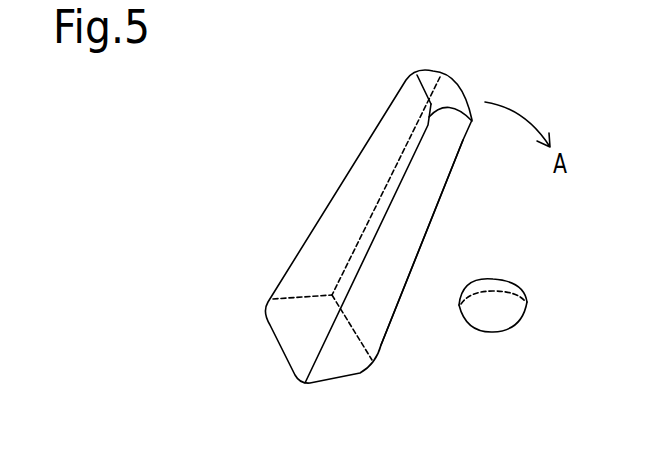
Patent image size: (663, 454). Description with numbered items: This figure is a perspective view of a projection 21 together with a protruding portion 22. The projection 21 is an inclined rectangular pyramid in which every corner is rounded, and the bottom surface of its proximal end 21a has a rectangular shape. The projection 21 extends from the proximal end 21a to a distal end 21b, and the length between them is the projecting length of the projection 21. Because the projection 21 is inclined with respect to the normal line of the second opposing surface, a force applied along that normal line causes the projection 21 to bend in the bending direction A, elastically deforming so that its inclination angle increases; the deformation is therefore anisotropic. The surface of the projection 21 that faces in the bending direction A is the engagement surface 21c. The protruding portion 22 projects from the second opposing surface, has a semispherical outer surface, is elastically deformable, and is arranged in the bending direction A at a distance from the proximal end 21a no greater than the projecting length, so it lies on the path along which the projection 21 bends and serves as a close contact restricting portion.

The projection 21 is at (399, 198).
The proximal end 21a is at (292, 303).
The distal end 21b is at (435, 69).
The engagement surface 21c is at (400, 298).
The protruding portion 22 is at (507, 280).